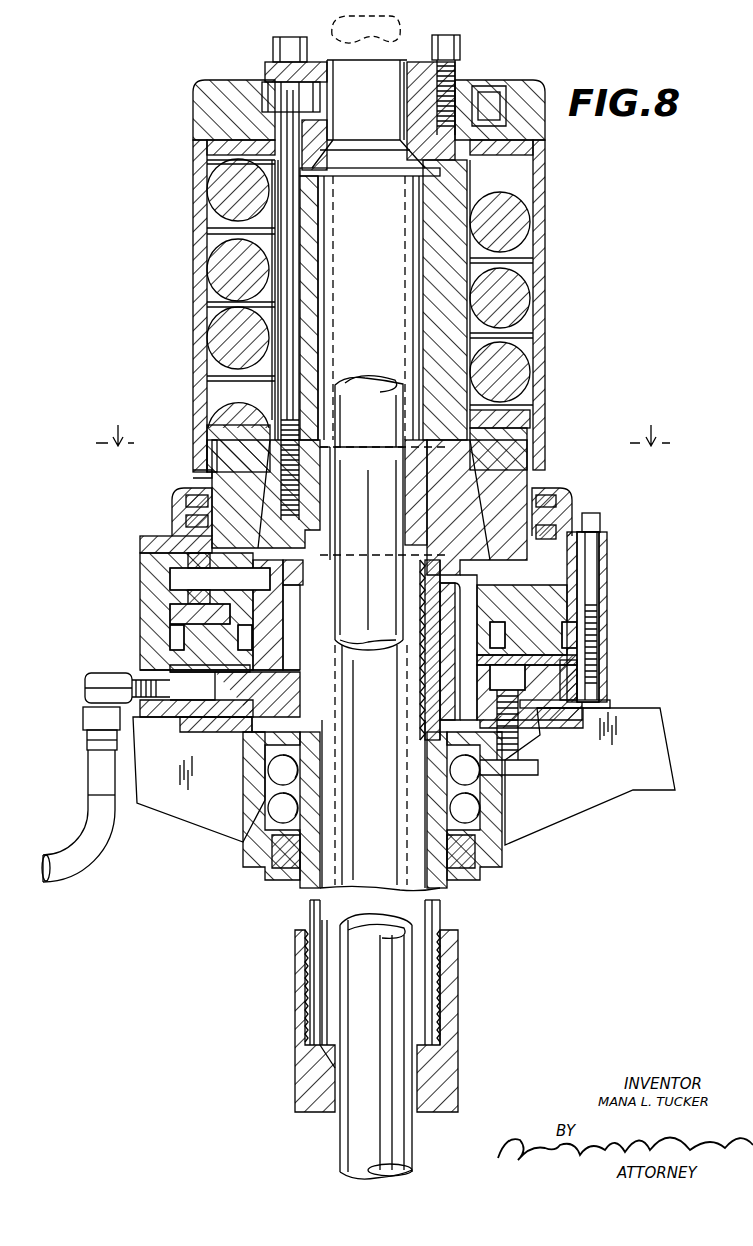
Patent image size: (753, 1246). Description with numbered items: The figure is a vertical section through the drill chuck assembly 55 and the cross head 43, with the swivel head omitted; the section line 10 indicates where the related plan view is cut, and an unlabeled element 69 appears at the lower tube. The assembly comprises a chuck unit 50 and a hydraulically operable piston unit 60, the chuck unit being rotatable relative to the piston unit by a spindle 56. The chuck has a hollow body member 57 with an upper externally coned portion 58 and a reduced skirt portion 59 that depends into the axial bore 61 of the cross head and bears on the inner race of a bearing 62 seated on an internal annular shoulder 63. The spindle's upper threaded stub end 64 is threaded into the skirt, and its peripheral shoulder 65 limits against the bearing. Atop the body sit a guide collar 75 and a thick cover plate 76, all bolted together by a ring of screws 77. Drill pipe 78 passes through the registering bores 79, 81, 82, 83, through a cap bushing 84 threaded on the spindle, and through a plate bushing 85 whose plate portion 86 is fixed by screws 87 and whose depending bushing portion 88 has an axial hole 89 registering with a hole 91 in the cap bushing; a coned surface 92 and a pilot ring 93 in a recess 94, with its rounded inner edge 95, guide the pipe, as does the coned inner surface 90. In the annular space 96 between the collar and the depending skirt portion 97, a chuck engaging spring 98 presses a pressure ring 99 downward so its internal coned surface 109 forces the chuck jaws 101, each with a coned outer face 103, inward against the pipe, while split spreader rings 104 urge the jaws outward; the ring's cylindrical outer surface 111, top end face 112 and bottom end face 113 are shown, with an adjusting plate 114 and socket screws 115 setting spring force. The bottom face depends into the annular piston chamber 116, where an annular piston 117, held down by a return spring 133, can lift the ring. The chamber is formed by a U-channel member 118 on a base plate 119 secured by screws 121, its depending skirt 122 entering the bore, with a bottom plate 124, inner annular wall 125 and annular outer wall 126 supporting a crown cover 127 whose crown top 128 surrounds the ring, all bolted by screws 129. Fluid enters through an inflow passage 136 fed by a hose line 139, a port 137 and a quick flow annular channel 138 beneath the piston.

The section line 10 is at (383, 445).
The cross head 43 is at (664, 718).
The chuck unit 50 is at (190, 378).
The drill chuck assembly 55 is at (568, 372).
The spindle 56 is at (442, 916).
The hollow body member 57 is at (330, 492).
The upper externally coned portion 58 is at (212, 464).
The reduced skirt portion 59 is at (428, 690).
The hydraulically operable piston unit 60 is at (135, 594).
The axial bore 61 is at (250, 778).
The bearing 62 is at (325, 806).
The internal annular shoulder 63 is at (266, 808).
The upper threaded stub end 64 is at (343, 686).
The peripheral shoulder 65 is at (270, 852).
The tube 69 is at (308, 918).
The guide collar 75 is at (440, 240).
The cover plate 76 is at (222, 86).
The ring of screws 77 is at (285, 270).
The drill pipe 78 is at (400, 20).
The bore of the spindle 79 is at (324, 960).
The bore of the chuck 81 is at (333, 508).
The bore of the guide collar 82 is at (318, 305).
The bore of the cover plate 83 is at (418, 86).
The cap bushing 84 is at (458, 998).
The plate bushing 85 is at (262, 70).
The plate portion 86 is at (327, 50).
The ring of screws 87 is at (456, 40).
The depending bushing portion 88 is at (333, 100).
The axial hole 89 is at (404, 75).
The coned inner surface 90 is at (330, 1062).
The hole 91 is at (415, 1088).
The coned surface 92 is at (334, 156).
The pilot ring 93 is at (326, 135).
The recess 94 is at (425, 185).
The rounded inner edge 95 is at (324, 190).
The annular space 96 is at (208, 248).
The depending skirt portion 97 is at (195, 285).
The chuck engaging spring 98 is at (207, 190).
The pressure ring 99 is at (540, 465).
The chuck jaws 101 is at (412, 490).
The coned outer face 103 is at (480, 470).
The split spreader rings 104 is at (330, 450).
The internal coned surface 109 is at (486, 510).
The cylindrical outer surface 111 is at (208, 443).
The top end face 112 is at (225, 418).
The bottom end face 113 is at (250, 575).
The adjusting plate 114 is at (228, 146).
The socket screws 115 is at (492, 92).
The annular piston chamber 116 is at (178, 576).
The annular piston 117 is at (178, 616).
The U-channel member 118 is at (606, 590).
The base plate 119 is at (608, 702).
The ring of screws 121 is at (530, 738).
The depending skirt 122 is at (522, 762).
The bottom plate 124 is at (578, 678).
The inner annular wall 125 is at (445, 648).
The annular outer wall 126 is at (606, 558).
The crown cover 127 is at (162, 540).
The crown top 128 is at (575, 485).
The ring of screws 129 is at (602, 522).
The return spring 133 is at (192, 508).
The inflow passage 136 is at (176, 702).
The port 137 is at (195, 680).
The quick flow annular channel 138 is at (175, 650).
The hose line 139 is at (68, 848).